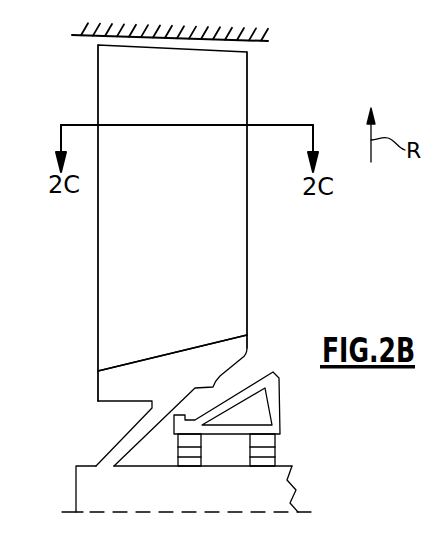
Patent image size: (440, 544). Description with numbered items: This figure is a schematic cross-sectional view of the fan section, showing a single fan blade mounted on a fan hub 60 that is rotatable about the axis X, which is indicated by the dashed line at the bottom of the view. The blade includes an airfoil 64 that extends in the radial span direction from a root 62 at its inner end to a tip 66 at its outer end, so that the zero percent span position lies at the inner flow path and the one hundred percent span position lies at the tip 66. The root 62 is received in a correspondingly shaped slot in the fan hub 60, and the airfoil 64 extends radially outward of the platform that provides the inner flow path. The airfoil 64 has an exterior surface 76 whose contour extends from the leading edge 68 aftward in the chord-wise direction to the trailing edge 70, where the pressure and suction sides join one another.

The fan hub 60 is at (127, 451).
The root 62 is at (236, 357).
The airfoil 64 is at (256, 244).
The tip 66 is at (205, 50).
The leading edge 68 is at (98, 196).
The trailing edge 70 is at (248, 157).
The exterior surface 76 is at (210, 217).
The axis X is at (308, 512).